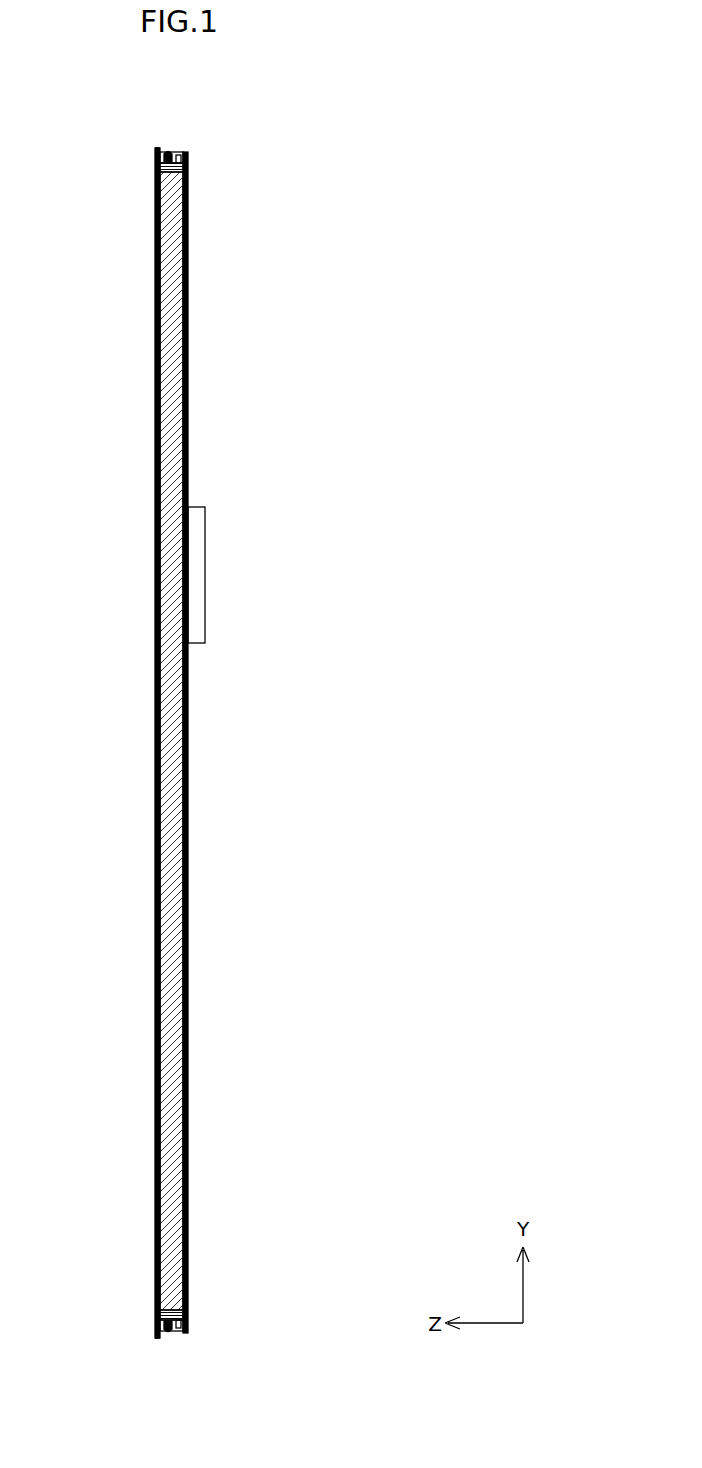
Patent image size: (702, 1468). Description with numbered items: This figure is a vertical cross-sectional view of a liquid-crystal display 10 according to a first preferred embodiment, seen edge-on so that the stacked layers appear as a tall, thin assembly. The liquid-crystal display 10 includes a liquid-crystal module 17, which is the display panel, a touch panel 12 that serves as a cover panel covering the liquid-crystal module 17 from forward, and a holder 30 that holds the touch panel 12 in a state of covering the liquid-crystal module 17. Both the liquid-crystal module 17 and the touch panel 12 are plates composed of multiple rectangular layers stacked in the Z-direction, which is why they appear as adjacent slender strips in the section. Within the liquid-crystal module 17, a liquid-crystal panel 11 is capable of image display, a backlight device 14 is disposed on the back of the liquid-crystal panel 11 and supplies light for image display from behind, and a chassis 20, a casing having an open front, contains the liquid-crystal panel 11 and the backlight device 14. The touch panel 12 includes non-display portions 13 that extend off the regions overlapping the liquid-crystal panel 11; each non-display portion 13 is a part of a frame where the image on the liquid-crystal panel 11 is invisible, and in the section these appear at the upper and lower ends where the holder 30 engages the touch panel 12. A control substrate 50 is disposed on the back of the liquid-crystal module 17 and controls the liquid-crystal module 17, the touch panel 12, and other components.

The liquid-crystal display 10 is at (118, 89).
The liquid-crystal panel 11 is at (163, 193).
The touch panel 12 is at (158, 150).
The non-display portion 13 is at (156, 153).
The backlight device 14 is at (173, 212).
The liquid-crystal module 17 is at (200, 131).
The chassis 20 is at (187, 235).
The holder 30 is at (168, 156).
The control substrate 50 is at (195, 573).